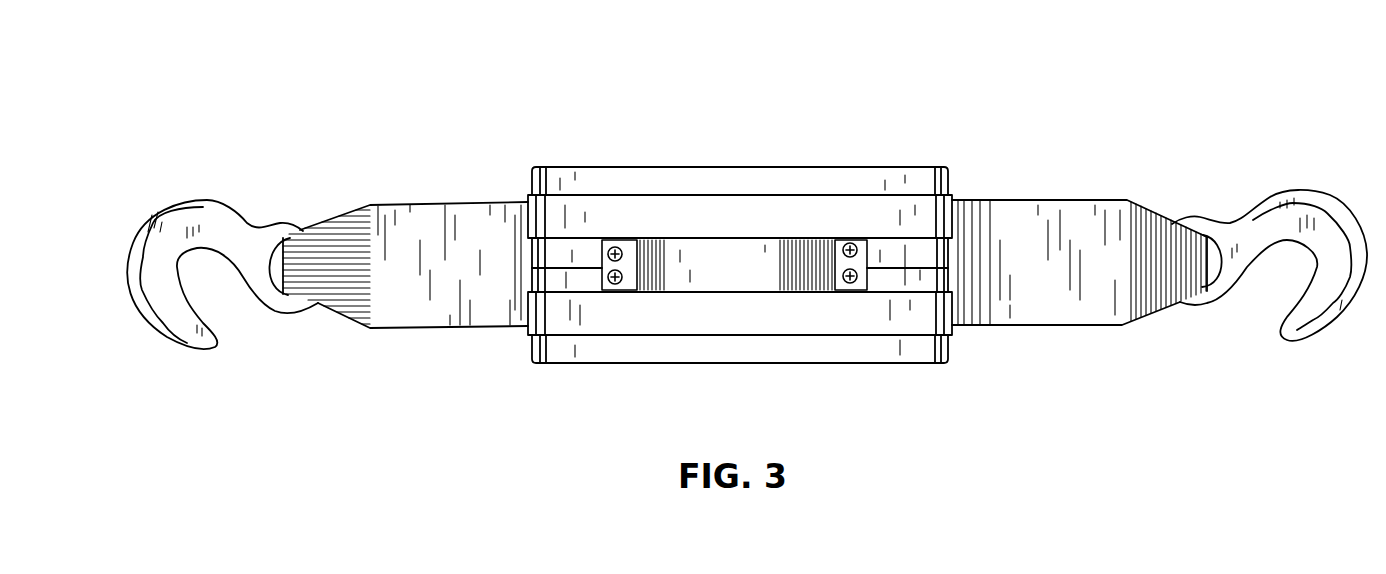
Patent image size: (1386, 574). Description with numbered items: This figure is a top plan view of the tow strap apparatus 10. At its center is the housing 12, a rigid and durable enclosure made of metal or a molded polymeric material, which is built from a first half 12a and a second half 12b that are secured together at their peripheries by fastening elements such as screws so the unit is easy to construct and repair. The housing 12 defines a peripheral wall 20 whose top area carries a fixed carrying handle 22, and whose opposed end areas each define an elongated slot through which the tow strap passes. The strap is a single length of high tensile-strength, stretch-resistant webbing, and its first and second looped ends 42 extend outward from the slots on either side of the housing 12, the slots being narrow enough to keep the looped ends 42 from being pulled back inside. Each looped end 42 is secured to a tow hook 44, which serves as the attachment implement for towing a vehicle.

The tow strap apparatus 10 is at (1075, 133).
The housing 12 is at (914, 166).
The first half 12a is at (643, 365).
The second half 12b is at (613, 167).
The peripheral wall 20 is at (883, 275).
The carrying handle 22 is at (765, 273).
The looped ends 42 is at (487, 302).
The tow hook 44 is at (203, 206).